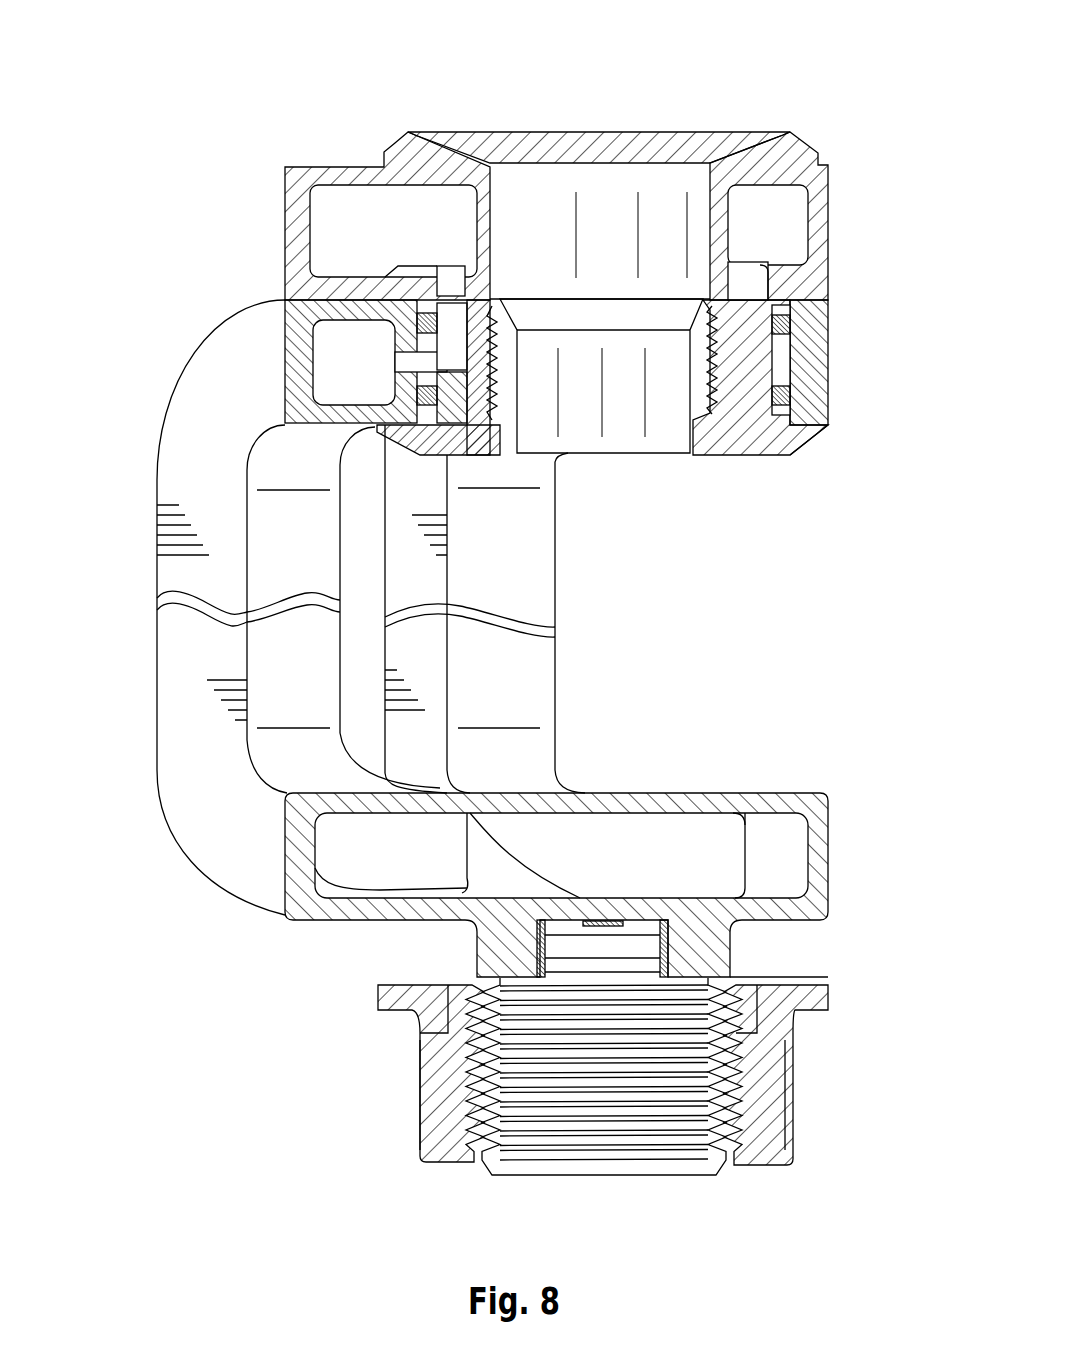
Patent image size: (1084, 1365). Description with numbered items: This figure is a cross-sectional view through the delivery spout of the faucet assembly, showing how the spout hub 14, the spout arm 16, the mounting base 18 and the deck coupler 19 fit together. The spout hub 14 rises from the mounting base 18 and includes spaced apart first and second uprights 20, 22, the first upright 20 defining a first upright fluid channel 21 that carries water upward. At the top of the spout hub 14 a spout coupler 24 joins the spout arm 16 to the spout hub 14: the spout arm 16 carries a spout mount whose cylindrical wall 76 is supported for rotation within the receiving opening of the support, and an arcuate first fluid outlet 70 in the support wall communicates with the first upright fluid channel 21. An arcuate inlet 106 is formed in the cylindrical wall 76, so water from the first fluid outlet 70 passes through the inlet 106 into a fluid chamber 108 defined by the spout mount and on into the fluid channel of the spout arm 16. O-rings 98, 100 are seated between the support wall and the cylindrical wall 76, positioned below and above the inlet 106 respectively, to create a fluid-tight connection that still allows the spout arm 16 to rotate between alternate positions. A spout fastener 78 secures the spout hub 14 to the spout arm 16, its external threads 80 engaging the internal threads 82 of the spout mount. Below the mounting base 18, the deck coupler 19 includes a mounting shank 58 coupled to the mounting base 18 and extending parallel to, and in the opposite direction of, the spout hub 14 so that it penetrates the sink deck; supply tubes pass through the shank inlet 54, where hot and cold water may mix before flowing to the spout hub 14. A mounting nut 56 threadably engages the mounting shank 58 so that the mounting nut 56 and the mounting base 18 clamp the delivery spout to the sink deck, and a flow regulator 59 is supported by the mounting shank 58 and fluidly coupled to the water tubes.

The spout hub 14 is at (632, 682).
The spout arm 16 is at (670, 116).
The mounting base 18 is at (840, 842).
The deck coupler 19 is at (828, 1114).
The first upright 20 is at (128, 452).
The first upright fluid channel 21 is at (330, 354).
The second upright 22 is at (575, 602).
The spout coupler 24 is at (840, 368).
The inlet 54 is at (686, 1192).
The mounting nut 56 is at (414, 1103).
The mounting shank 58 is at (752, 975).
The flow regulator 59 is at (540, 937).
The first fluid outlet 70 is at (382, 351).
The cylindrical wall 76 is at (735, 400).
The spout fastener 78 is at (815, 460).
The external threads 80 is at (490, 362).
The internal threads 82 is at (708, 375).
The o-ring 98 is at (790, 396).
The o-ring 100 is at (826, 312).
The arcuate inlet 106 is at (410, 362).
The fluid chamber 108 is at (356, 212).